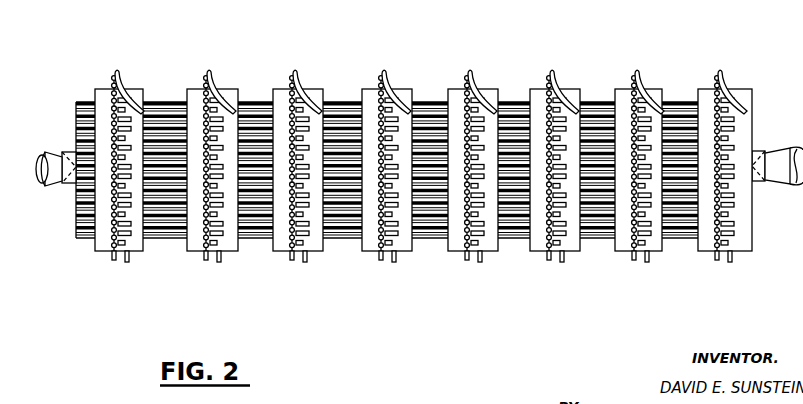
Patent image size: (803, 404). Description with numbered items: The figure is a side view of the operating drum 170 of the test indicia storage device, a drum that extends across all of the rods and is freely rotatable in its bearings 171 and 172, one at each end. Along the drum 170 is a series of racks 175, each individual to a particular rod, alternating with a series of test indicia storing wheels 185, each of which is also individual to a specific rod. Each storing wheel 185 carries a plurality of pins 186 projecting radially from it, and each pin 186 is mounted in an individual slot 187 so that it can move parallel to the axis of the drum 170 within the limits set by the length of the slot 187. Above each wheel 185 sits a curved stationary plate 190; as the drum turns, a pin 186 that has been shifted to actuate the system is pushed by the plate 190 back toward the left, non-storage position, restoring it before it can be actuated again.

The drum 170 is at (523, 80).
The bearing 171 is at (72, 184).
The bearing 172 is at (757, 181).
The rack 175 is at (83, 102).
The test indicia storing wheel 185 is at (143, 241).
The pin 186 is at (114, 258).
The slot 187 is at (133, 233).
The curved stationary plate 190 is at (118, 72).